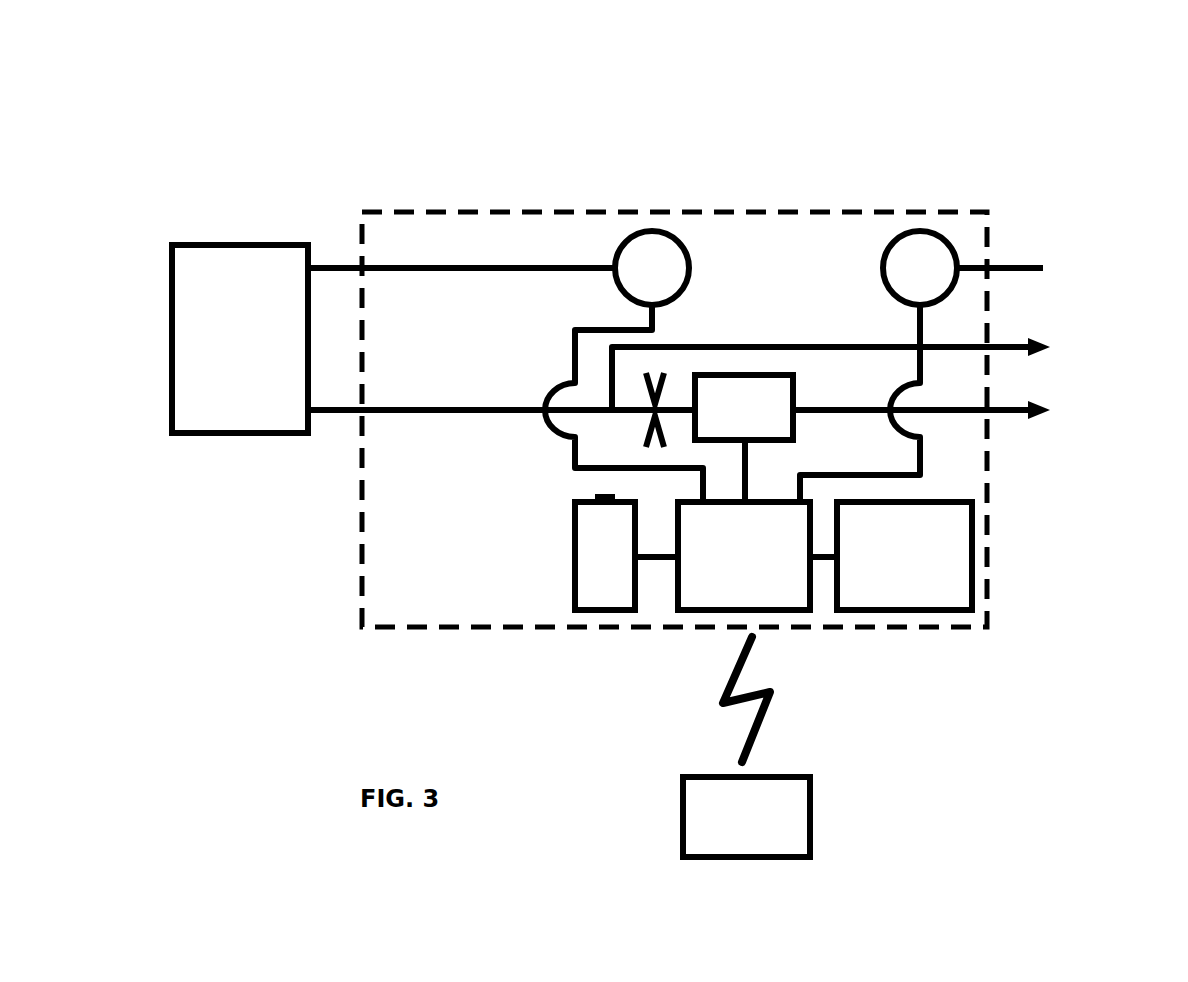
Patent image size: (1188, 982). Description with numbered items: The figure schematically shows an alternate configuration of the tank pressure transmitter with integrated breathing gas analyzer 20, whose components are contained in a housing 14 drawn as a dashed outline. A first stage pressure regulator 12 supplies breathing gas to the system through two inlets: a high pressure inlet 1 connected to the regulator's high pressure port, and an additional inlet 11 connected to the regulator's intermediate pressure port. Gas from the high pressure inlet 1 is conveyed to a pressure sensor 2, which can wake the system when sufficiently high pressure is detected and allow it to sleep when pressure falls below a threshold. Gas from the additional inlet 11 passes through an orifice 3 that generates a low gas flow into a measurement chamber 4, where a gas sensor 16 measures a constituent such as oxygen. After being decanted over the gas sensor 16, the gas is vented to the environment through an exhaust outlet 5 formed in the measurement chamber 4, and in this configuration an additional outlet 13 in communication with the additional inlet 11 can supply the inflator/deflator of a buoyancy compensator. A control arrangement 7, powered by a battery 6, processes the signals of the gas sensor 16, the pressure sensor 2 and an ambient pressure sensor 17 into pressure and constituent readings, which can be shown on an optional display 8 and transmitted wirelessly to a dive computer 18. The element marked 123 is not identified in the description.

The high pressure inlet 1 is at (337, 247).
The pressure sensor 2 is at (644, 255).
The orifice 3 is at (661, 362).
The measurement chamber 4 is at (765, 362).
The exhaust outlet 5 is at (1006, 433).
The battery 6 is at (597, 540).
The control arrangement 7 is at (770, 555).
The display 8 is at (968, 605).
The additional inlet 11 is at (381, 392).
The first stage pressure regulator 12 is at (236, 282).
The additional outlet 13 is at (1017, 328).
The housing 14 is at (358, 632).
The gas sensor 16 is at (744, 410).
The ambient pressure sensor 17 is at (932, 262).
The dive computer 18 is at (710, 806).
The tank pressure transmitter with integrated breathing gas analyzer 20 is at (1035, 158).
The memory module 123 is at (965, 595).